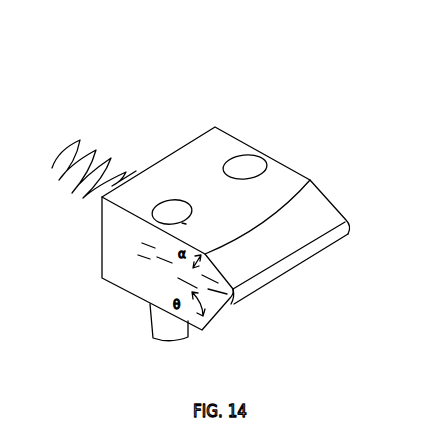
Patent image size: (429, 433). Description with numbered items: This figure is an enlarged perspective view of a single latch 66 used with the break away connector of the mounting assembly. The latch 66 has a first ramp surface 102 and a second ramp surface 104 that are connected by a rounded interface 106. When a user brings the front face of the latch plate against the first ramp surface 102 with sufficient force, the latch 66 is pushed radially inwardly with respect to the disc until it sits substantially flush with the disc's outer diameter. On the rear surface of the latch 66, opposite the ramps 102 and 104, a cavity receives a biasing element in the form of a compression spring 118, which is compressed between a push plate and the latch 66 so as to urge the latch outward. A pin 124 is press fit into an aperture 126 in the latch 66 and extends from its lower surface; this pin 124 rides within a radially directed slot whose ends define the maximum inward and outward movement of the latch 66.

The latch 66 is at (291, 114).
The first ramp surface 102 is at (236, 311).
The second ramp surface 104 is at (322, 216).
The rounded interface 106 is at (330, 241).
The compression spring 118 is at (80, 131).
The pin 124 is at (145, 325).
The aperture 126 is at (163, 200).